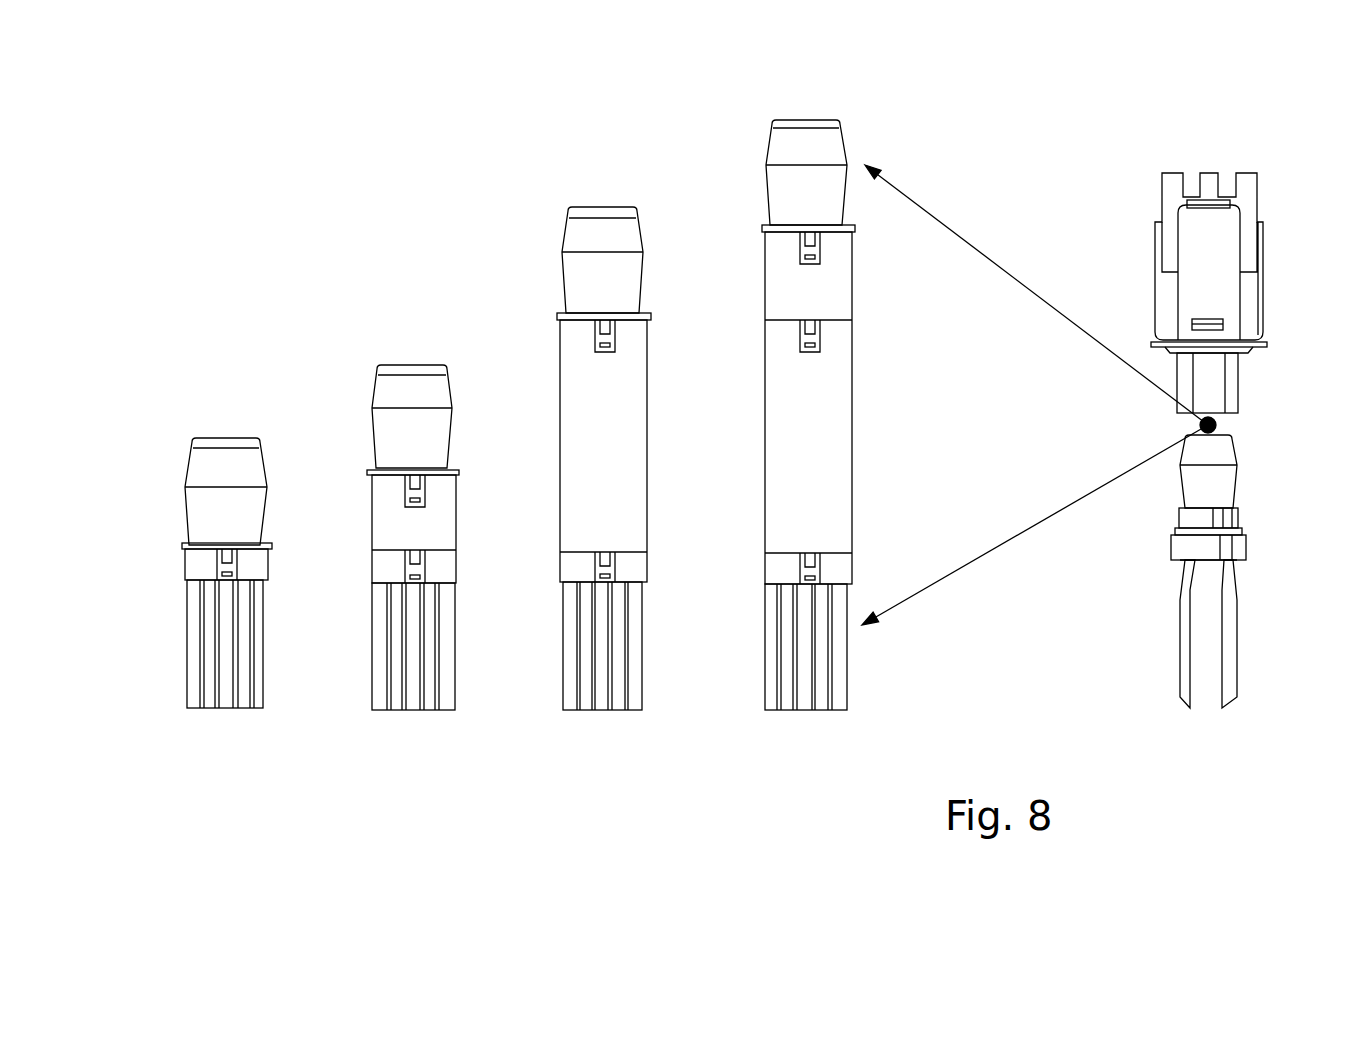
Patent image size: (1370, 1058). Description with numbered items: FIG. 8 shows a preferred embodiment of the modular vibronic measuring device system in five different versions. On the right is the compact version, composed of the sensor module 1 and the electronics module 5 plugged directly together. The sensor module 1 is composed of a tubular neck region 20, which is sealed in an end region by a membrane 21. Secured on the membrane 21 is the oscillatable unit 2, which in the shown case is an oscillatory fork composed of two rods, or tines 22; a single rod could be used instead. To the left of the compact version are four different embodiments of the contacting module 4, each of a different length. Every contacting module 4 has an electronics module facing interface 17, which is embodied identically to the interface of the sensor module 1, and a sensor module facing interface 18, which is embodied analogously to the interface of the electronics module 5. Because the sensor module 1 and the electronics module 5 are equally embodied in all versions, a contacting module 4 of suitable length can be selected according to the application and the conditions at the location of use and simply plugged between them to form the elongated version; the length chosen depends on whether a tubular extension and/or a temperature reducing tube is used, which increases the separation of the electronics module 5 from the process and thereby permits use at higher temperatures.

The sensor module 1 is at (1147, 537).
The oscillatable unit 2 is at (1264, 660).
The contacting module 4 is at (295, 594).
The electronics module 5 is at (1282, 234).
The electronics module facing interface 17 is at (237, 438).
The sensor module facing interface 18 is at (238, 710).
The tubular neck region 20 is at (1232, 550).
The membrane 21 is at (1177, 562).
The tines 22 is at (1232, 612).